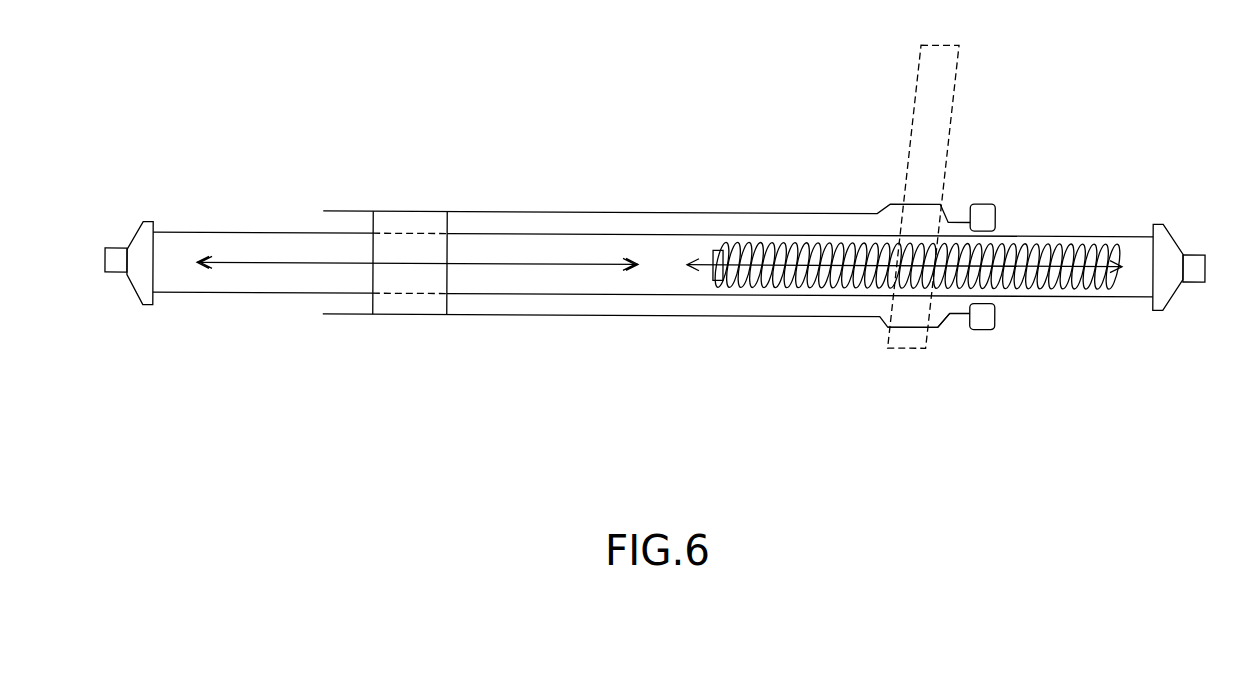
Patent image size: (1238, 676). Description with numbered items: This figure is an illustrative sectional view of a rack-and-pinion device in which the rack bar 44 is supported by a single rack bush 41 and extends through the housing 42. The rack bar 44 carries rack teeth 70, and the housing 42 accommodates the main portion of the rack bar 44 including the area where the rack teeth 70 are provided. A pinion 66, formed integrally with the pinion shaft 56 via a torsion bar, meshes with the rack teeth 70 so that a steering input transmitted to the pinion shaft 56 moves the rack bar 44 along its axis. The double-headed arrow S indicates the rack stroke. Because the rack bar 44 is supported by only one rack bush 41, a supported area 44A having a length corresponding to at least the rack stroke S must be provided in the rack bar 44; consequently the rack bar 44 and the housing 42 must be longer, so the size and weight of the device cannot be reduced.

The bearing 41 is at (411, 224).
The housing 42 is at (608, 213).
The rack bar 44 is at (527, 233).
The supported area 44A is at (279, 238).
The pinion shaft 56 is at (957, 92).
The pinion 66 is at (940, 323).
The rack teeth 70 is at (1069, 235).
The rack stroke S is at (819, 238).